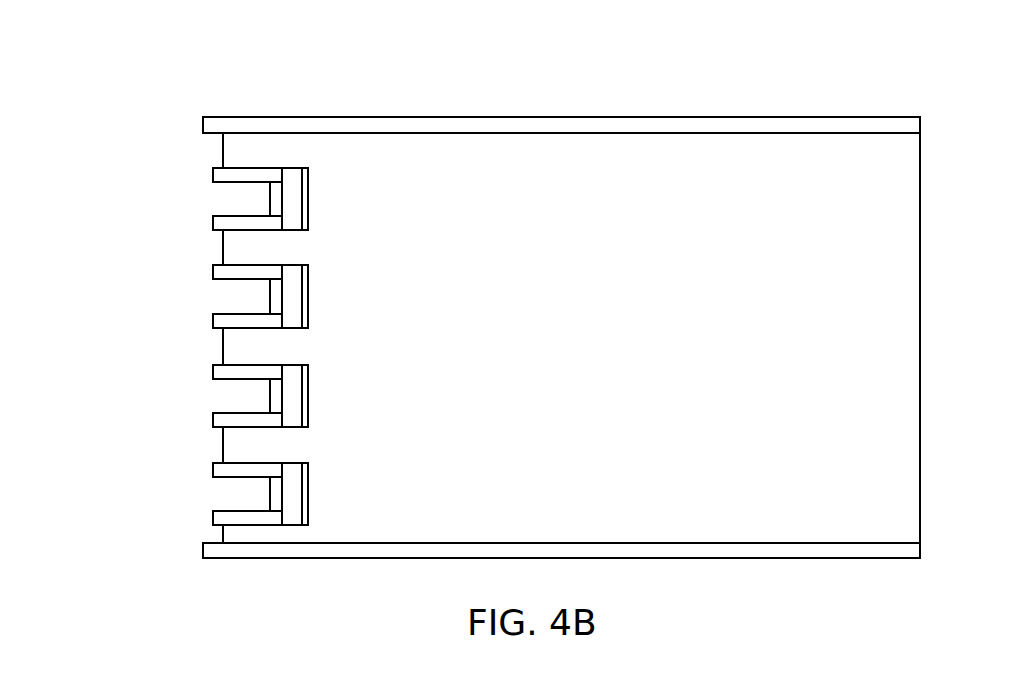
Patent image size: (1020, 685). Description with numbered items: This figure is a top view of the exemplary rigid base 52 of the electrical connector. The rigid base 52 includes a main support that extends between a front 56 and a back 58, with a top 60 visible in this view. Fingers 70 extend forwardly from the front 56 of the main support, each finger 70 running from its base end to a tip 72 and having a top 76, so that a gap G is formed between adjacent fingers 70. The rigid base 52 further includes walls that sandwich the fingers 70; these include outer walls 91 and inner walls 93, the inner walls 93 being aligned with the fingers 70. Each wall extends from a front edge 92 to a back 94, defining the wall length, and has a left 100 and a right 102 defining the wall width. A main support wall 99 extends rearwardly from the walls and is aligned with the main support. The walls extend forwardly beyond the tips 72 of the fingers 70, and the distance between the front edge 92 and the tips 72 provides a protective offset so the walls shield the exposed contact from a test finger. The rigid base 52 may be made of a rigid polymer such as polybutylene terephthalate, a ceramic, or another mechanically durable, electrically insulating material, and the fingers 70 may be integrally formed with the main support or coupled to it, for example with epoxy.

The rigid base 52 is at (740, 78).
The front 56 is at (132, 337).
The back 58 is at (921, 320).
The top 60 is at (600, 350).
The fingers 70 is at (197, 153).
The tip 72 is at (222, 247).
The top 76 is at (242, 347).
The outer walls 91 is at (203, 550).
The front edge 92 is at (203, 120).
The inner walls 93 is at (213, 517).
The back 94 is at (283, 176).
The main support wall 99 is at (802, 135).
The left 100 is at (255, 478).
The right 102 is at (245, 168).
The gap G is at (212, 201).